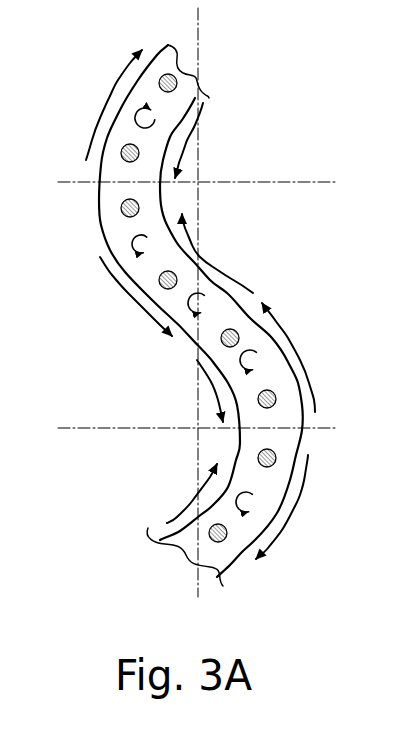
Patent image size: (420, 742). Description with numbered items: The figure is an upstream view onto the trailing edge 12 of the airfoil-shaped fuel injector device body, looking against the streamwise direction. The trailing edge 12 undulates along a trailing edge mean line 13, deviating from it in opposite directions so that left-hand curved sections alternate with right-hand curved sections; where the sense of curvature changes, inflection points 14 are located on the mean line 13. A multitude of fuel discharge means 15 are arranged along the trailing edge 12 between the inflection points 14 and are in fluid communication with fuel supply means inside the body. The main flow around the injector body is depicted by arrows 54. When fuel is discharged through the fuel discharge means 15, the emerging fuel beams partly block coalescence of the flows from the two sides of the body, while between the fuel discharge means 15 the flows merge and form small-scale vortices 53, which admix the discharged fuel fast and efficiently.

The trailing edge 12 is at (193, 252).
The trailing edge mean line 13 is at (200, 17).
The inflection points 14 is at (232, 329).
The fuel discharge means 15 is at (159, 82).
The small-scale vortices 53 is at (203, 104).
The main flow 54 is at (277, 320).